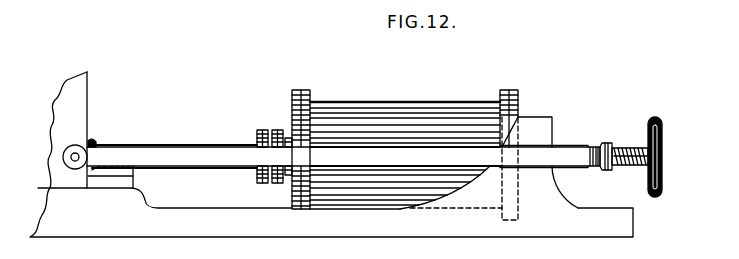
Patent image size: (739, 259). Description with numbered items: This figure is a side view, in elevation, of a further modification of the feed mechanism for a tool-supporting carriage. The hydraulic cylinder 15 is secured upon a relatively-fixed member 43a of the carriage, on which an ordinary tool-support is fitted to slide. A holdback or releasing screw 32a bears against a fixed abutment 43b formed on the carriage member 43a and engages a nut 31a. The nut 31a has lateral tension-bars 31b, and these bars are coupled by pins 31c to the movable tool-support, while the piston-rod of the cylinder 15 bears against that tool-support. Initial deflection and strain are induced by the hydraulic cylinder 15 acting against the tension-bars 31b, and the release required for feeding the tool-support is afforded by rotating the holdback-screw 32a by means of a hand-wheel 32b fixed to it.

The hydraulic cylinder 15 is at (405, 144).
The nut 31a is at (610, 168).
The lateral tension-bars 31b is at (343, 157).
The pins 31c is at (73, 152).
The holdback or releasing screw 32a is at (628, 146).
The hand-wheel 32b is at (663, 142).
The relatively-fixed member of tool-supporting carriage 43a is at (331, 201).
The fixed abutment 43b is at (529, 168).